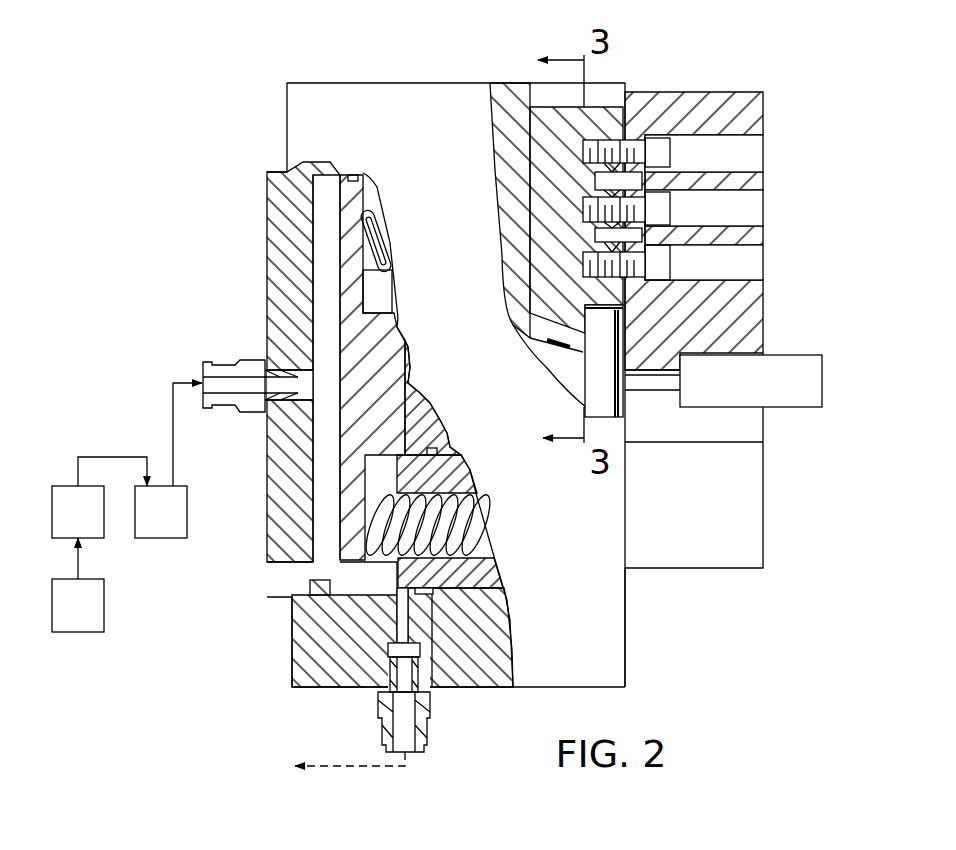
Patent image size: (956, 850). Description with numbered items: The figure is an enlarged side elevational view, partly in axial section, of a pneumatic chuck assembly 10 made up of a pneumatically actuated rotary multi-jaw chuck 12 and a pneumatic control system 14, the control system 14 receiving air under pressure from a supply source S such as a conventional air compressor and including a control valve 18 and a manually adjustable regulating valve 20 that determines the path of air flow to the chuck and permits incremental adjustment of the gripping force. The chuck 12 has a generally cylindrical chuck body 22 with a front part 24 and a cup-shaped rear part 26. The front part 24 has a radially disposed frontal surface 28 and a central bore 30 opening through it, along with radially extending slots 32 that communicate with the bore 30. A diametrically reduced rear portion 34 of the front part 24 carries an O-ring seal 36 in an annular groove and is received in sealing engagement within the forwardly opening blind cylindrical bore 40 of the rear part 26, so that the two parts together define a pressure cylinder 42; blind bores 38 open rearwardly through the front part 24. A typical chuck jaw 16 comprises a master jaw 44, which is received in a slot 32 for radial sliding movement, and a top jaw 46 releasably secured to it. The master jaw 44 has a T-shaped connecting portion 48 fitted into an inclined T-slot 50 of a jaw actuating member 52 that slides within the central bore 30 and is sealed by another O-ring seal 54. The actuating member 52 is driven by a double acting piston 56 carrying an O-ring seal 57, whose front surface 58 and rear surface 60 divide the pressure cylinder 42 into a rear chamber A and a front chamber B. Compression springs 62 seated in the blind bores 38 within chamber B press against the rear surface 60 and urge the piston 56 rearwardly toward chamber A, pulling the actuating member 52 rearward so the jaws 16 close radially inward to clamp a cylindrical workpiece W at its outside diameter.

The pneumatic chuck assembly 10 is at (242, 110).
The rotary multi-jaw chuck 12 is at (342, 53).
The pneumatic control system 14 is at (93, 432).
The chuck jaw 16 is at (707, 78).
The control valve 18 is at (99, 497).
The regulating valve 20 is at (224, 449).
The chuck body 22 is at (421, 100).
The front part 24 is at (602, 665).
The rear part 26 is at (272, 200).
The frontal surface 28 is at (630, 600).
The central bore 30 is at (453, 447).
The slot 32 is at (545, 90).
The rear portion 34 is at (397, 567).
The O-ring seal 36 is at (433, 590).
The blind bore 38 is at (478, 548).
The blind cylindrical bore 40 is at (327, 580).
The pressure cylinder 42 is at (327, 230).
The master jaw 44 is at (593, 115).
The top jaw 46 is at (718, 110).
The connecting portion 48 is at (547, 340).
The T-slot 50 is at (550, 338).
The jaw actuating member 52 is at (568, 380).
The O-ring seal 54 is at (425, 468).
The double acting piston 56 is at (352, 323).
The O-ring seal 57 is at (348, 177).
The front surface 58 is at (323, 170).
The rear surface 60 is at (373, 193).
The compression spring 62 is at (390, 250).
The chamber A is at (325, 463).
The chamber B is at (383, 589).
The supply source S is at (78, 585).
The workpiece W is at (787, 370).